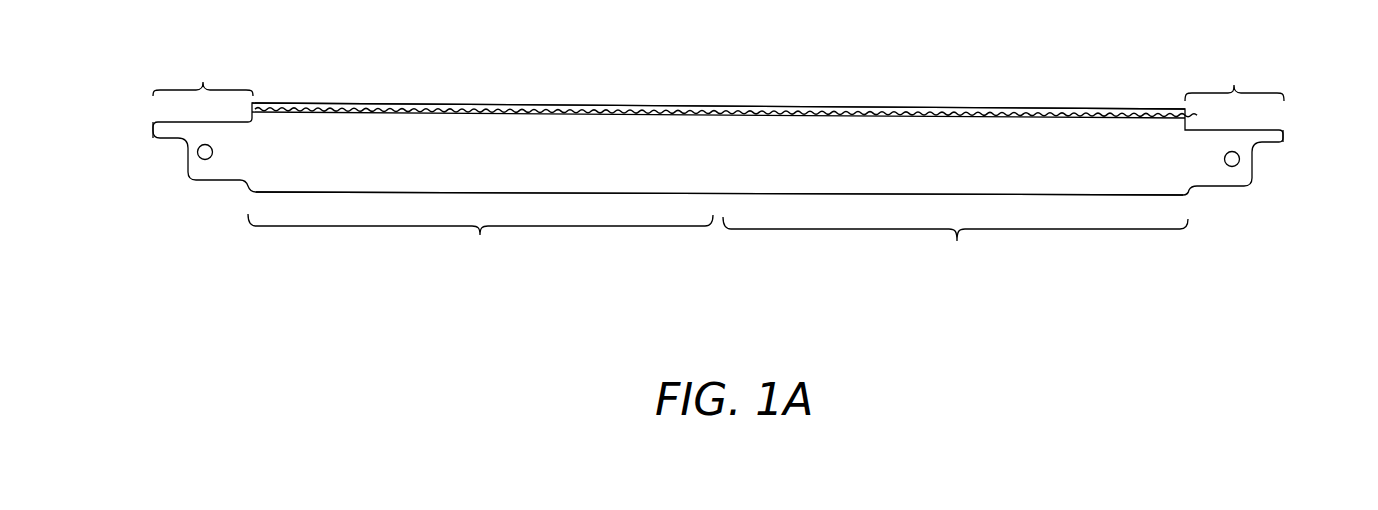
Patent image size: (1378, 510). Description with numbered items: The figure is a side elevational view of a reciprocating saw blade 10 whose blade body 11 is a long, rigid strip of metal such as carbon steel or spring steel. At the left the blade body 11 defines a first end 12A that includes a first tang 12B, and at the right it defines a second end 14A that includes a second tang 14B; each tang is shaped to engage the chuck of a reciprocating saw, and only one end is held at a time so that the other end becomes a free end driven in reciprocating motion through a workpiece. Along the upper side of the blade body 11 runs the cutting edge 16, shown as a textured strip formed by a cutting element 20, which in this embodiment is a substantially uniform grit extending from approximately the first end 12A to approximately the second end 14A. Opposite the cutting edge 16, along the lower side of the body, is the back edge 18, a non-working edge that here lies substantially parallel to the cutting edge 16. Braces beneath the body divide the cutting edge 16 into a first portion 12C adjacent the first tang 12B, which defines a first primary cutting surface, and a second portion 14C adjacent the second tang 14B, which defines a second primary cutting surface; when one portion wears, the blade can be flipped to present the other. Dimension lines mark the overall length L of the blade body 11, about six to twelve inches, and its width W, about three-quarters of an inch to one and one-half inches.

The reciprocating saw blade 10 is at (674, 78).
The blade body 11 is at (1128, 177).
The first end 12A is at (203, 75).
The first tang 12B is at (146, 133).
The first portion of the cutting edge 12C is at (480, 238).
The second end 14A is at (1234, 81).
The second tang 14B is at (1291, 153).
The second portion of the cutting edge 14C is at (955, 241).
The cutting edge 16 is at (490, 101).
The back edge 18 is at (317, 196).
The cutting element 20 is at (933, 107).
The width W is at (317, 101).
The length L is at (1283, 150).